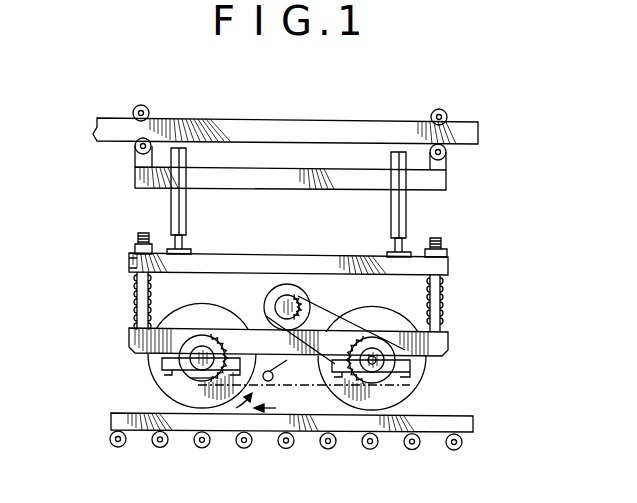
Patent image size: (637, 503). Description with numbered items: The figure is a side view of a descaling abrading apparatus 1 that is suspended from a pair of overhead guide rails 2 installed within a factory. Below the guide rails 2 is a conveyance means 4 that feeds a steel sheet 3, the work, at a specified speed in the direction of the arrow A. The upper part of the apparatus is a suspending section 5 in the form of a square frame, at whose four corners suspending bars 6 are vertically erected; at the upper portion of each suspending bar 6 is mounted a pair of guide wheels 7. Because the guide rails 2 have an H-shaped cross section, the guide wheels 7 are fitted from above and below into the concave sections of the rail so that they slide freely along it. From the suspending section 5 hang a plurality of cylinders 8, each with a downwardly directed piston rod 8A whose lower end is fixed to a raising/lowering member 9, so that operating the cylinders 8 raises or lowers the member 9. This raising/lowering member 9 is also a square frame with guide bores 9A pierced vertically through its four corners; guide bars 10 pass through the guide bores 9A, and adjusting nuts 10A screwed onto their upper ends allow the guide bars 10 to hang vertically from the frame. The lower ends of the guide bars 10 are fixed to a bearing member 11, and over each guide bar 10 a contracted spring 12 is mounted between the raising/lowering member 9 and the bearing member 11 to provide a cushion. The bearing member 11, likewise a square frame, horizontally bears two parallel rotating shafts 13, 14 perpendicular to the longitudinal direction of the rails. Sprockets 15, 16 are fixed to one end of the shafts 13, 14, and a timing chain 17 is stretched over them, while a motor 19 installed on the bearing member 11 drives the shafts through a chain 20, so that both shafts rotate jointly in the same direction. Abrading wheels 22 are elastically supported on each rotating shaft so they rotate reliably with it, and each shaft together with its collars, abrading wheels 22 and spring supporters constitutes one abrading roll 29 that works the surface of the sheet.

The descaling abrading apparatus 1 is at (271, 346).
The guide rail 2 is at (183, 127).
The steel sheet 3 is at (112, 422).
The conveyance means 4 is at (117, 447).
The suspending section 5 is at (446, 181).
The suspending bar 6 is at (134, 158).
The guide wheel 7 is at (136, 108).
The cylinder 8 is at (186, 204).
The piston rod 8A is at (190, 250).
The raising/lowering member 9 is at (272, 254).
The guide bore 9A is at (130, 262).
The guide bar 10 is at (135, 290).
The adjusting nut 10A is at (135, 248).
The bearing member 11 is at (133, 341).
The spring 12 is at (137, 312).
The rotating shaft 13 is at (384, 360).
The rotating shaft 14 is at (192, 362).
The sprocket 15 is at (378, 382).
The sprocket 16 is at (200, 380).
The timing chain 17 is at (313, 388).
The motor 19 is at (266, 306).
The chain 20 is at (322, 315).
The abrading wheel 22 is at (165, 384).
The abrading roll 29 is at (433, 380).